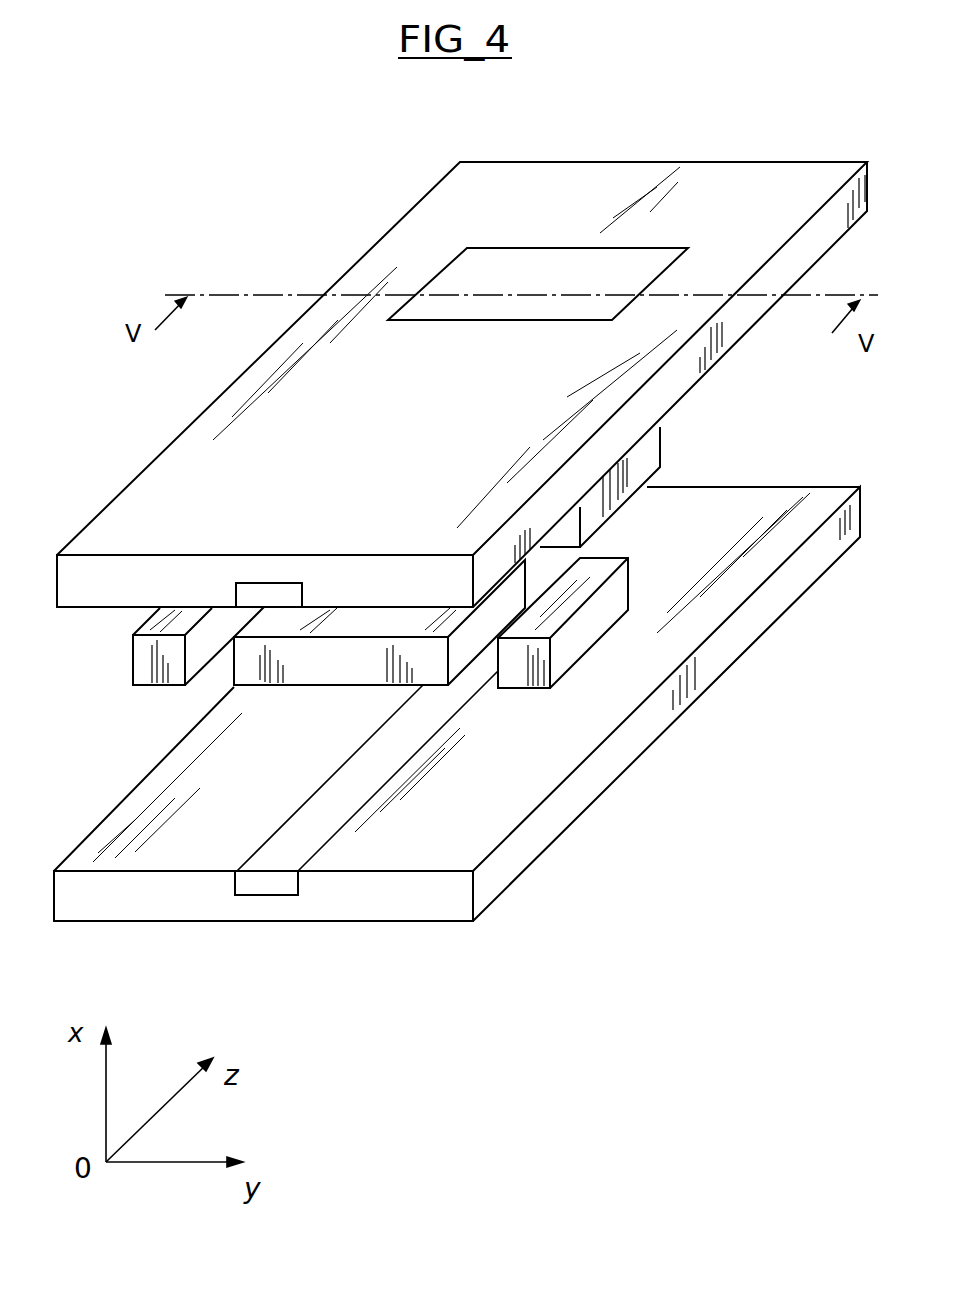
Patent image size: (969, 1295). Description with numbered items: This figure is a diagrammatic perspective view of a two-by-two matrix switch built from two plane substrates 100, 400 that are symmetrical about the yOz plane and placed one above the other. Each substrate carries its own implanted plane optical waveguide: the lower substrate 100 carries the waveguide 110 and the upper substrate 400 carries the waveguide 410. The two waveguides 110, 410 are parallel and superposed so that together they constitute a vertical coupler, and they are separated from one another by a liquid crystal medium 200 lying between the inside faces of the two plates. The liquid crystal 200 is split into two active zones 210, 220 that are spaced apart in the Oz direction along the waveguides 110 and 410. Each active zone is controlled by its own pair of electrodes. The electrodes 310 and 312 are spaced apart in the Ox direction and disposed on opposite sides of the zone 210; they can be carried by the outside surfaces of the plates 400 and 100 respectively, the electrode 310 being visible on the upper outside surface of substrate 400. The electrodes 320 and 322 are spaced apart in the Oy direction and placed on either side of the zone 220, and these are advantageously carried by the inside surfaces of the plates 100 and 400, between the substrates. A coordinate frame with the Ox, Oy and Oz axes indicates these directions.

The plane substrate 100 is at (422, 900).
The plane optical waveguide 110 is at (268, 896).
The liquid crystal medium 200 is at (634, 501).
The active zone 210 is at (672, 446).
The active zone 220 is at (310, 660).
The electrode 310 is at (553, 258).
The electrode 312 is at (728, 677).
The electrode 320 is at (143, 657).
The electrode 322 is at (520, 667).
The plane substrate 400 is at (133, 517).
The plane optical waveguide 410 is at (270, 592).